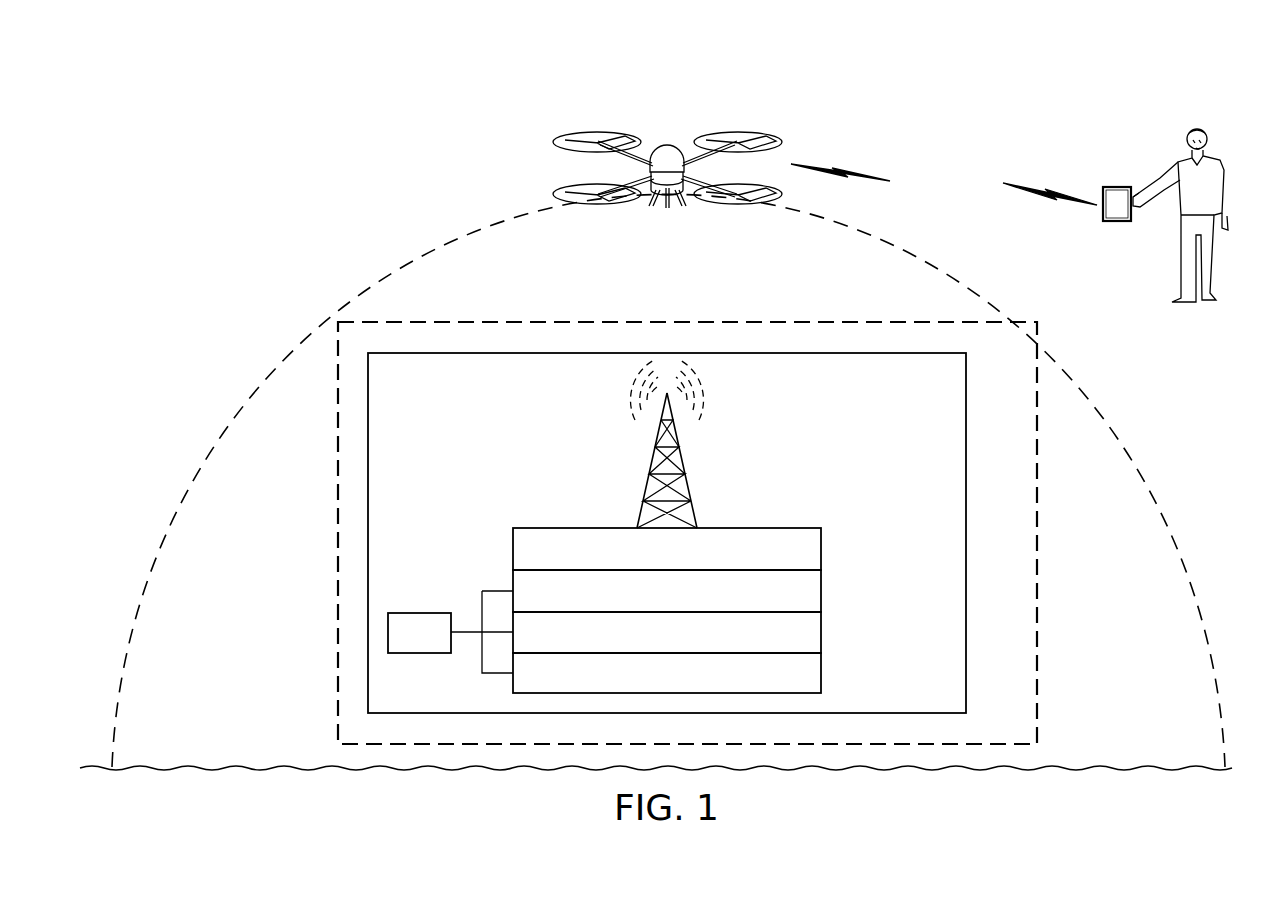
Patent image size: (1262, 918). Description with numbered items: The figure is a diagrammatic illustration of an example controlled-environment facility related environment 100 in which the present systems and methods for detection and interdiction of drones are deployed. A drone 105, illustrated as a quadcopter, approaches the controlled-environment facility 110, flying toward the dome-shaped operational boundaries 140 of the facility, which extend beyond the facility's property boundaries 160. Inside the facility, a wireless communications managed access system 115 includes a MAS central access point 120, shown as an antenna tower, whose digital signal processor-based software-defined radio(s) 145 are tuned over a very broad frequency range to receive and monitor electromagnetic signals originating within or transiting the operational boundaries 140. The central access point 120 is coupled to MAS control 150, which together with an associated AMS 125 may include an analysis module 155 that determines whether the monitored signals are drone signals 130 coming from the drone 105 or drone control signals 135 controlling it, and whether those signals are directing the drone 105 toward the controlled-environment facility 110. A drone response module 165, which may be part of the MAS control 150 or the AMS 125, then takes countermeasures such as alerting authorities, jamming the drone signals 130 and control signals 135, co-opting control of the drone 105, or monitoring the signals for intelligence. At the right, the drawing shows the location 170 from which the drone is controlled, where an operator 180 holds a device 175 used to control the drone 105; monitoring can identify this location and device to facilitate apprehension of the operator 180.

The controlled-environment facility related environment 100 is at (414, 126).
The drone 105 is at (666, 142).
The controlled-environment facility 110 is at (480, 502).
The wireless communications managed access system 115 is at (593, 496).
The MAS central access point 120 is at (684, 471).
The AMS 125 is at (417, 610).
The drone signals 130 is at (861, 168).
The drone control signals 135 is at (1066, 189).
The operational boundaries 140 is at (337, 285).
The software-defined radio(s) 145 is at (822, 548).
The MAS control 150 is at (822, 589).
The analysis module 155 is at (822, 630).
The property boundaries 160 is at (336, 595).
The drone response module 165 is at (822, 671).
The location 170 is at (1128, 94).
The device 175 is at (1124, 222).
The operator 180 is at (1194, 127).